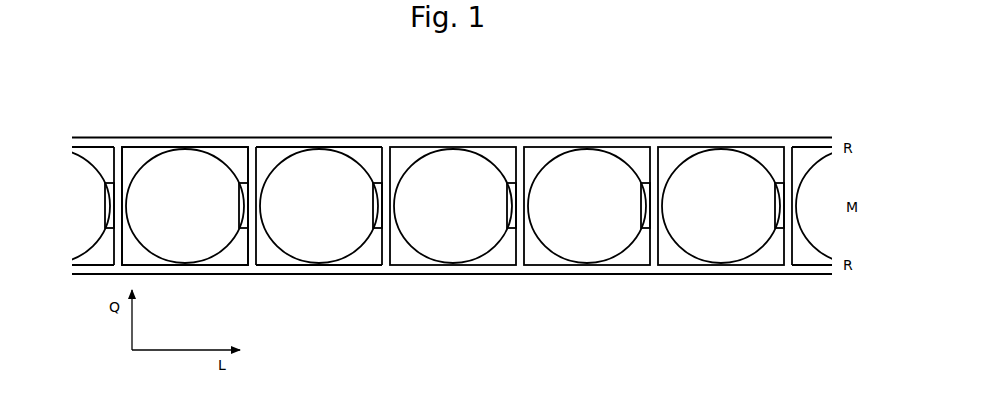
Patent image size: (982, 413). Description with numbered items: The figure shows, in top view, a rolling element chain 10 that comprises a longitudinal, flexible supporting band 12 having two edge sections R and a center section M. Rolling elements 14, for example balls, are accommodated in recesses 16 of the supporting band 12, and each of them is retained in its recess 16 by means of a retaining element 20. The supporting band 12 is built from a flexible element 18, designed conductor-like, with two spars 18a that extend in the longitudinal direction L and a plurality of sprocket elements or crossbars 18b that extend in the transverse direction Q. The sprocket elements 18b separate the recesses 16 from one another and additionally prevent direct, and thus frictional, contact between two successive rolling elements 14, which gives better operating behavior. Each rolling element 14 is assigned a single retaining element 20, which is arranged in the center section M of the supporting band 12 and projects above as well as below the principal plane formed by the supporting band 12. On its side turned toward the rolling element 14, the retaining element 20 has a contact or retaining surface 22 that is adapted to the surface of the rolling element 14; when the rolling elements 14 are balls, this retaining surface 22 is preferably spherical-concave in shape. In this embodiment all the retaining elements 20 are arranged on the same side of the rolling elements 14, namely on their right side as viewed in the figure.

The rolling element chain 10 is at (172, 76).
The supporting band 12 is at (110, 145).
The rolling element 14 is at (712, 235).
The recess 16 is at (369, 165).
The flexible element 18 is at (226, 146).
The spar 18a is at (363, 270).
The sprocket element 18b is at (387, 242).
The retaining element 20 is at (512, 185).
The retaining surface 22 is at (637, 198).